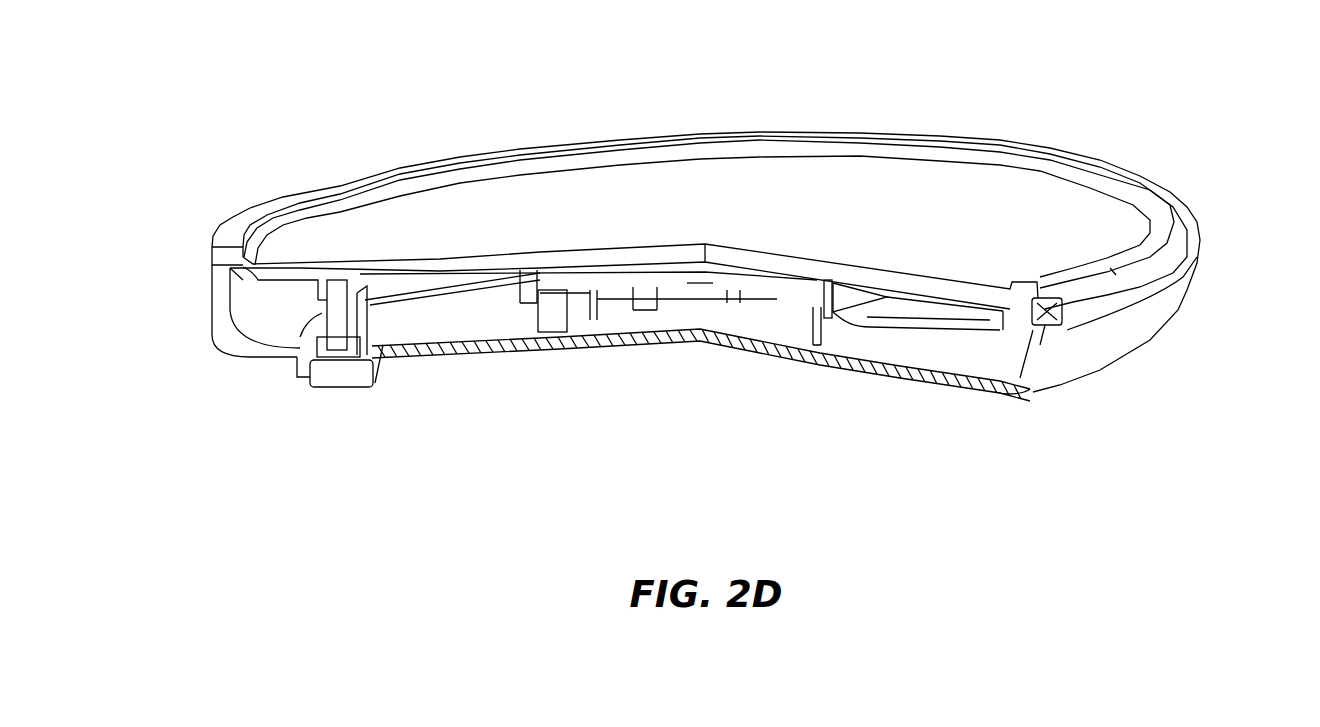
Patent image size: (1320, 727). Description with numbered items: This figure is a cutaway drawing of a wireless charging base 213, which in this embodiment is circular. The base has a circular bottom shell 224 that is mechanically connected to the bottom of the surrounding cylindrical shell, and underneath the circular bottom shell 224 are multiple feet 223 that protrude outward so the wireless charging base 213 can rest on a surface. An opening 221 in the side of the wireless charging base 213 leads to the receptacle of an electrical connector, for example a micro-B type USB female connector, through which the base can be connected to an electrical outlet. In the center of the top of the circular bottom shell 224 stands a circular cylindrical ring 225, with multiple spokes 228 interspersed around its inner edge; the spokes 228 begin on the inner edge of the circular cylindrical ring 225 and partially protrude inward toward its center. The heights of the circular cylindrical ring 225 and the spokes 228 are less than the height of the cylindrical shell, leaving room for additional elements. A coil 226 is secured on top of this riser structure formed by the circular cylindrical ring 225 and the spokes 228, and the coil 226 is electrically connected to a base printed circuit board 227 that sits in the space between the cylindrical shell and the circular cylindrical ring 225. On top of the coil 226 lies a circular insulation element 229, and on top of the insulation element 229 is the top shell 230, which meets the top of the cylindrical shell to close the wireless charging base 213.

The wireless charging base 213 is at (716, 274).
The opening 221 is at (1083, 315).
The feet 223 is at (327, 411).
The circular bottom shell 224 is at (243, 369).
The circular cylindrical ring 225 is at (832, 343).
The coil 226 is at (624, 303).
The base printed circuit board 227 is at (968, 338).
The spokes 228 is at (594, 325).
The insulation element 229 is at (715, 276).
The top shell 230 is at (739, 172).